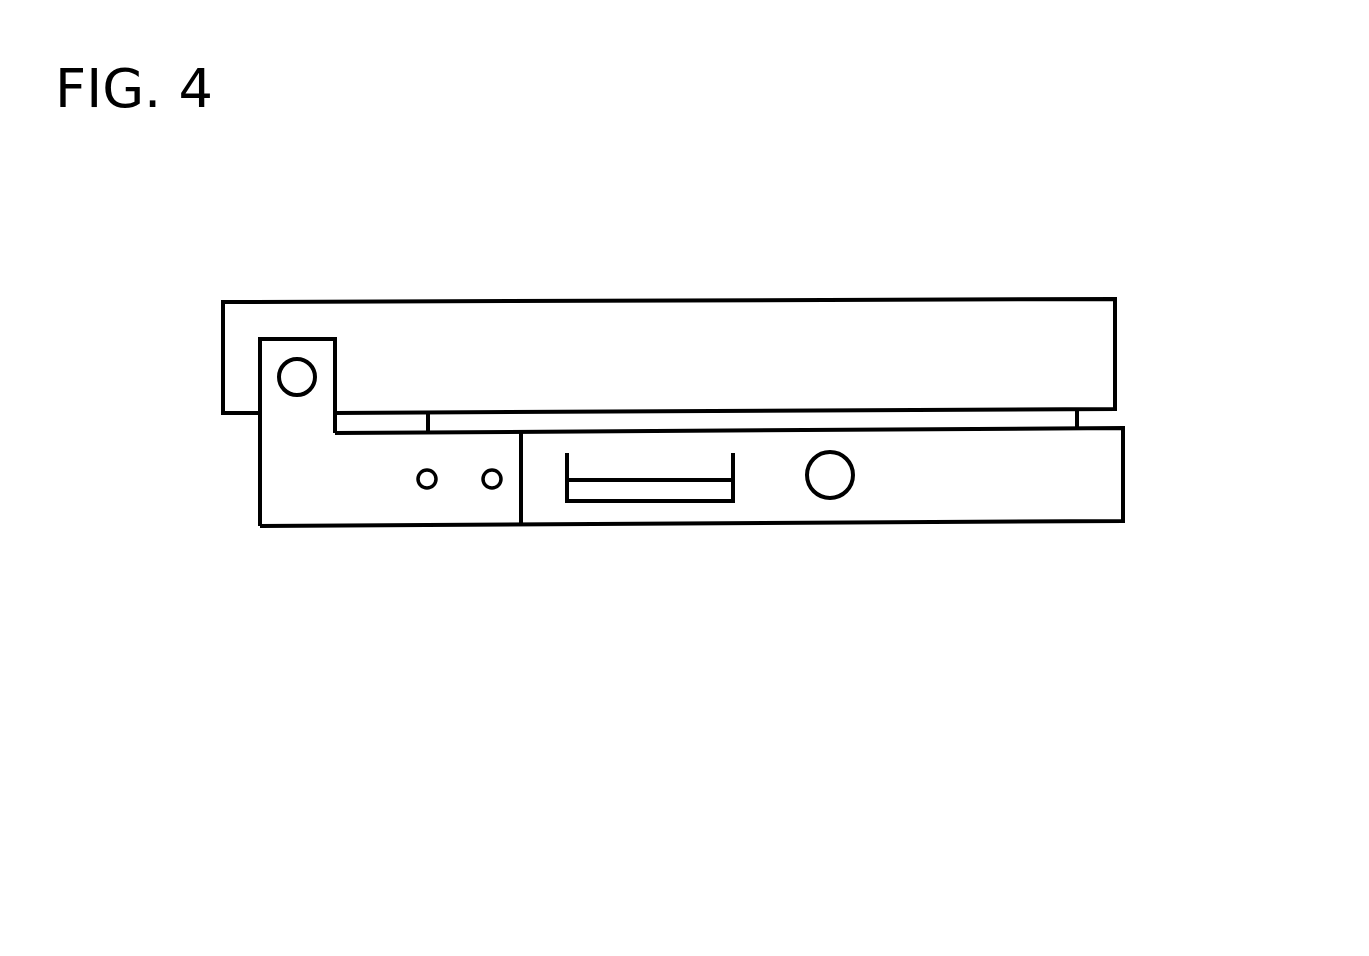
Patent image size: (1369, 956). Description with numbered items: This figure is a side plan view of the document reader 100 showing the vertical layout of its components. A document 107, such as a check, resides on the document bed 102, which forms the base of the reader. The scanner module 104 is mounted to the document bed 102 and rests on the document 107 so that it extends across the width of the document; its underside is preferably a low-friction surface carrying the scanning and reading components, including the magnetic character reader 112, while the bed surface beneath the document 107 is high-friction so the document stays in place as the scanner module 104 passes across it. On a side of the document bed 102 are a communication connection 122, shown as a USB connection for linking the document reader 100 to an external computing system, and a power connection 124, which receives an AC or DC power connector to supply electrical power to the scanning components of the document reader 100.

The document reader 100 is at (1224, 608).
The document bed 102 is at (1075, 476).
The scanner module 104 is at (1000, 298).
The document 107 is at (1049, 415).
The magnetic character reader 112 is at (283, 362).
The communication connection 122 is at (647, 502).
The power connection 124 is at (832, 500).